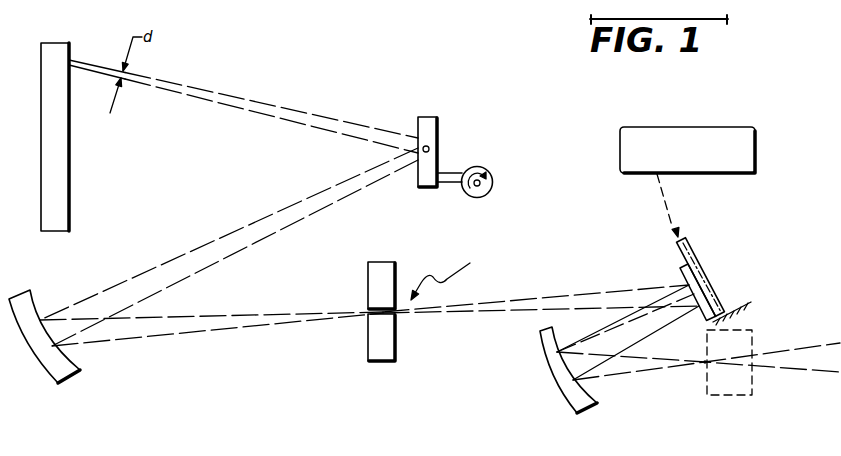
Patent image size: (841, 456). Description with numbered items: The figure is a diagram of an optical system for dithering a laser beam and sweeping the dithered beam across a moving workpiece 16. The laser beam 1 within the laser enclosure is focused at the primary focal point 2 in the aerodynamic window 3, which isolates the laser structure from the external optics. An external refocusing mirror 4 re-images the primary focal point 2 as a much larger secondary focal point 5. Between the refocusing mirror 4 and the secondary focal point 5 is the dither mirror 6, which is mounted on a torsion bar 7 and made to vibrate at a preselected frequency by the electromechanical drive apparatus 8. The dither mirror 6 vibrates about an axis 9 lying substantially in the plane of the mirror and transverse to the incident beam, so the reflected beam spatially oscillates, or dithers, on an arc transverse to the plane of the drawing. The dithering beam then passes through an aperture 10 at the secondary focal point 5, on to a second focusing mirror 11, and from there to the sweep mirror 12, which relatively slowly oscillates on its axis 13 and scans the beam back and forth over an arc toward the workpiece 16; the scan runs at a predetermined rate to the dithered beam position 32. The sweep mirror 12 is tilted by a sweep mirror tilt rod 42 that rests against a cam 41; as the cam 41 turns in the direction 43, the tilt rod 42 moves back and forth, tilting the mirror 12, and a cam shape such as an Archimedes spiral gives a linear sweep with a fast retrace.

The laser beam 1 is at (818, 346).
The primary focal point 2 is at (703, 366).
The aerodynamic window 3 is at (718, 395).
The refocusing mirror 4 is at (598, 417).
The secondary focal point 5 is at (447, 277).
The dither mirror 6 is at (682, 267).
The torsion bar 7 is at (699, 262).
The electromechanical drive apparatus 8 is at (717, 127).
The axis 9 is at (711, 284).
The aperture 10 is at (396, 313).
The second focusing mirror 11 is at (75, 374).
The sweep mirror 12 is at (420, 117).
The axis 13 is at (430, 147).
The workpiece 16 is at (68, 43).
The dithered beam position 32 is at (242, 98).
The cam 41 is at (493, 169).
The sweep mirror tilt rod 42 is at (451, 171).
The direction of cam rotation 43 is at (466, 194).